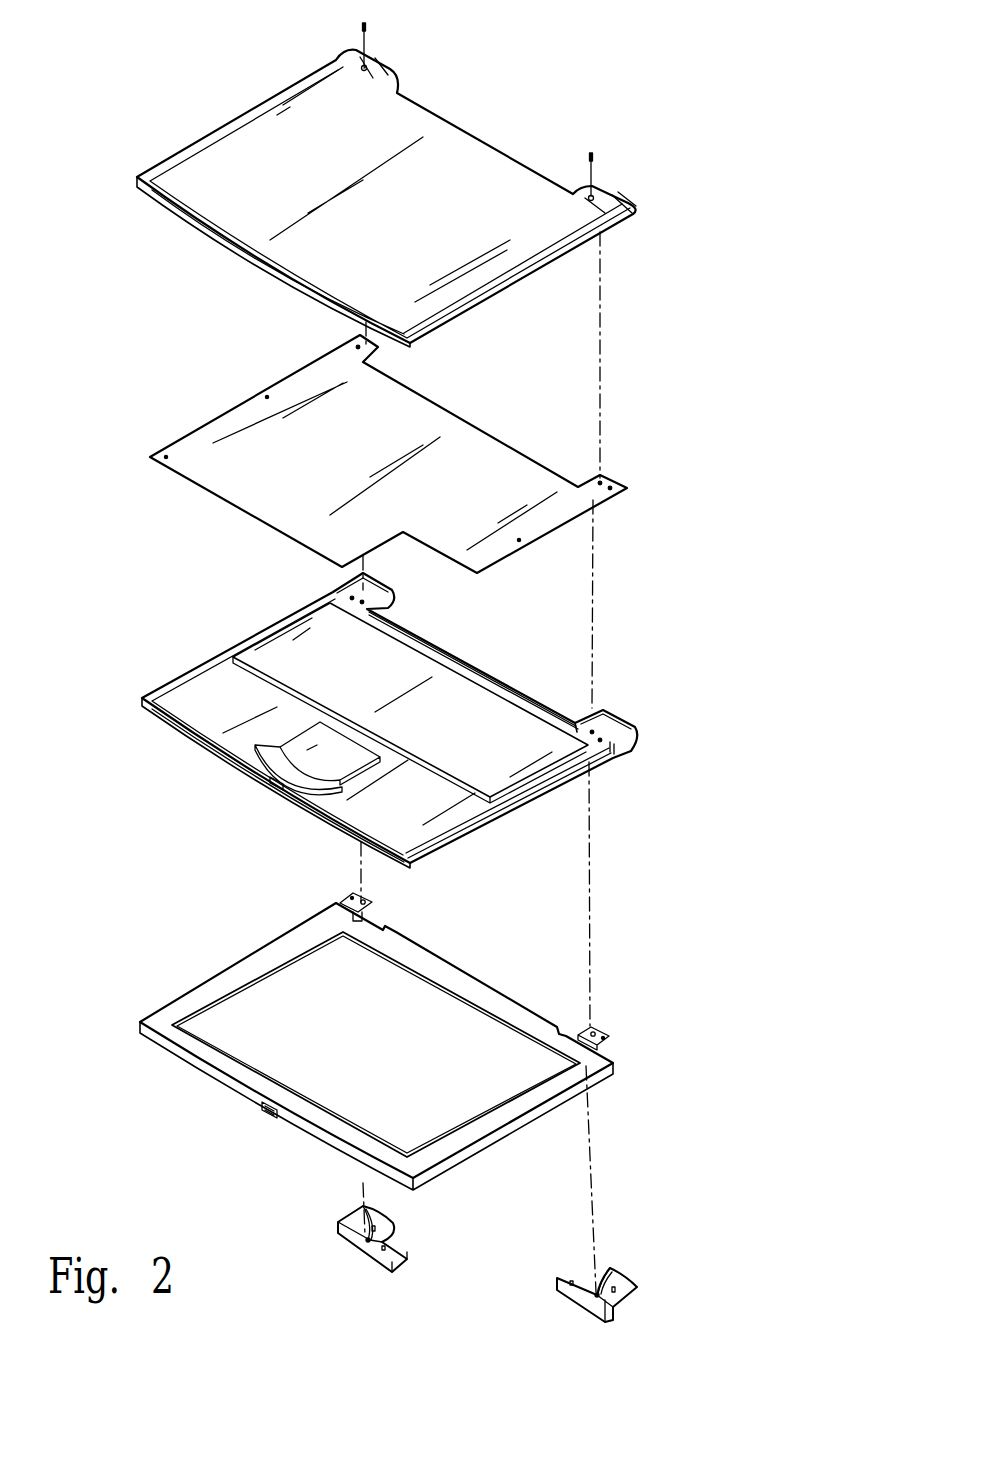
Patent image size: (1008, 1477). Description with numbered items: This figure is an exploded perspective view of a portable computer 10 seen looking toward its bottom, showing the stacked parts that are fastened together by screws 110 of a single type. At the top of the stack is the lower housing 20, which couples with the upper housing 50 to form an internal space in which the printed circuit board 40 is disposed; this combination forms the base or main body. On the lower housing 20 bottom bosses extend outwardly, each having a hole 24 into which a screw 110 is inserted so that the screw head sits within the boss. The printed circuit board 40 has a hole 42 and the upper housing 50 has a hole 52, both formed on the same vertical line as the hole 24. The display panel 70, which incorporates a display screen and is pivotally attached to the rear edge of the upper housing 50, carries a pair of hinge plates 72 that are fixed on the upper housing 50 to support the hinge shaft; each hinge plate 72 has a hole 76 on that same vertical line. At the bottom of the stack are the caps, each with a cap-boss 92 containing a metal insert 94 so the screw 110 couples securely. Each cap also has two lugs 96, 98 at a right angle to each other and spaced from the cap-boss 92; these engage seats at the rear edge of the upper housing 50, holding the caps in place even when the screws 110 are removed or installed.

The portable computer 10 is at (70, 64).
The lower housing 20 is at (230, 140).
The hole 24 is at (366, 66).
The screw 110 is at (368, 30).
The printed circuit board 40 is at (217, 430).
The hole 42 is at (383, 348).
The upper housing 50 is at (188, 697).
The hole 52 is at (364, 602).
The display panel 70 is at (242, 968).
The hinge plate 72 is at (348, 895).
The hole 76 is at (365, 900).
The cap-boss 92 is at (385, 1240).
The insert 94 is at (360, 1233).
The lug 96 is at (380, 1213).
The lug 98 is at (400, 1247).